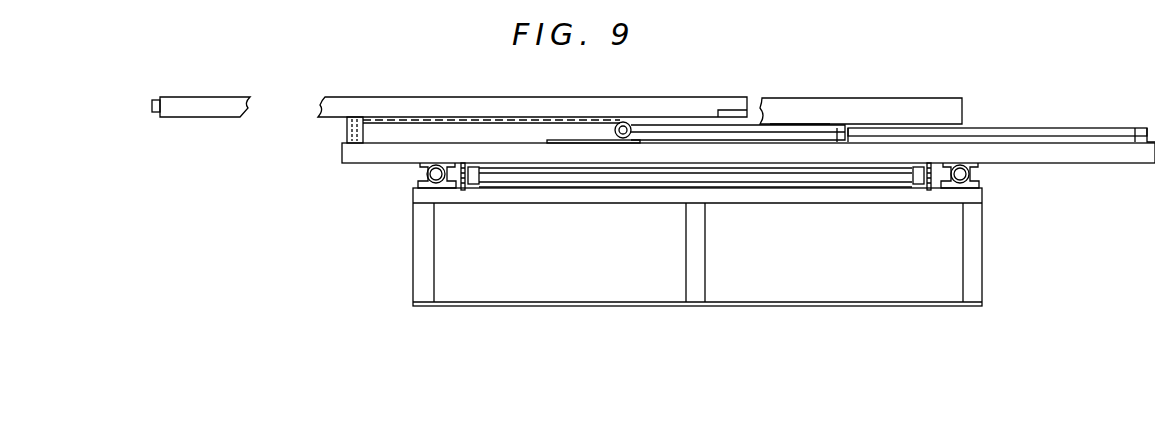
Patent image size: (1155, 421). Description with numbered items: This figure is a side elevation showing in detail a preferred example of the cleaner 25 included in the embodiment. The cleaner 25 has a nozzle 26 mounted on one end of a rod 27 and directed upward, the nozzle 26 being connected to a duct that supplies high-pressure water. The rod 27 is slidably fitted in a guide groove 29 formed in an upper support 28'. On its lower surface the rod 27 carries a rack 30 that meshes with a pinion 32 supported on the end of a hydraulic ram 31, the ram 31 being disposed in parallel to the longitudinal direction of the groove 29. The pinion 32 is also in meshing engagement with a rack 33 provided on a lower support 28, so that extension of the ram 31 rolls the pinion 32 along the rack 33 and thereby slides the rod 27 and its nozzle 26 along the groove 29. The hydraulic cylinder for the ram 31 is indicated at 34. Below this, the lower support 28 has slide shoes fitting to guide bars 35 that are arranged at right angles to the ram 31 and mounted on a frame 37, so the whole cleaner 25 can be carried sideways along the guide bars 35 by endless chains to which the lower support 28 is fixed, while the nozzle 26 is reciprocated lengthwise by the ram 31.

The cleaner 25 is at (350, 65).
The nozzle 26 is at (158, 100).
The rod 27 is at (215, 106).
The lower support 28 is at (532, 104).
The upper support 28' is at (861, 90).
The guide groove 29 is at (797, 122).
The rack 30 is at (420, 128).
The hydraulic ram 31 is at (726, 128).
The pinion 32 is at (619, 126).
The rack 33 is at (555, 140).
The hydraulic cylinder 34 is at (1038, 133).
The guide bars 35 is at (425, 171).
The frame 37 is at (978, 238).